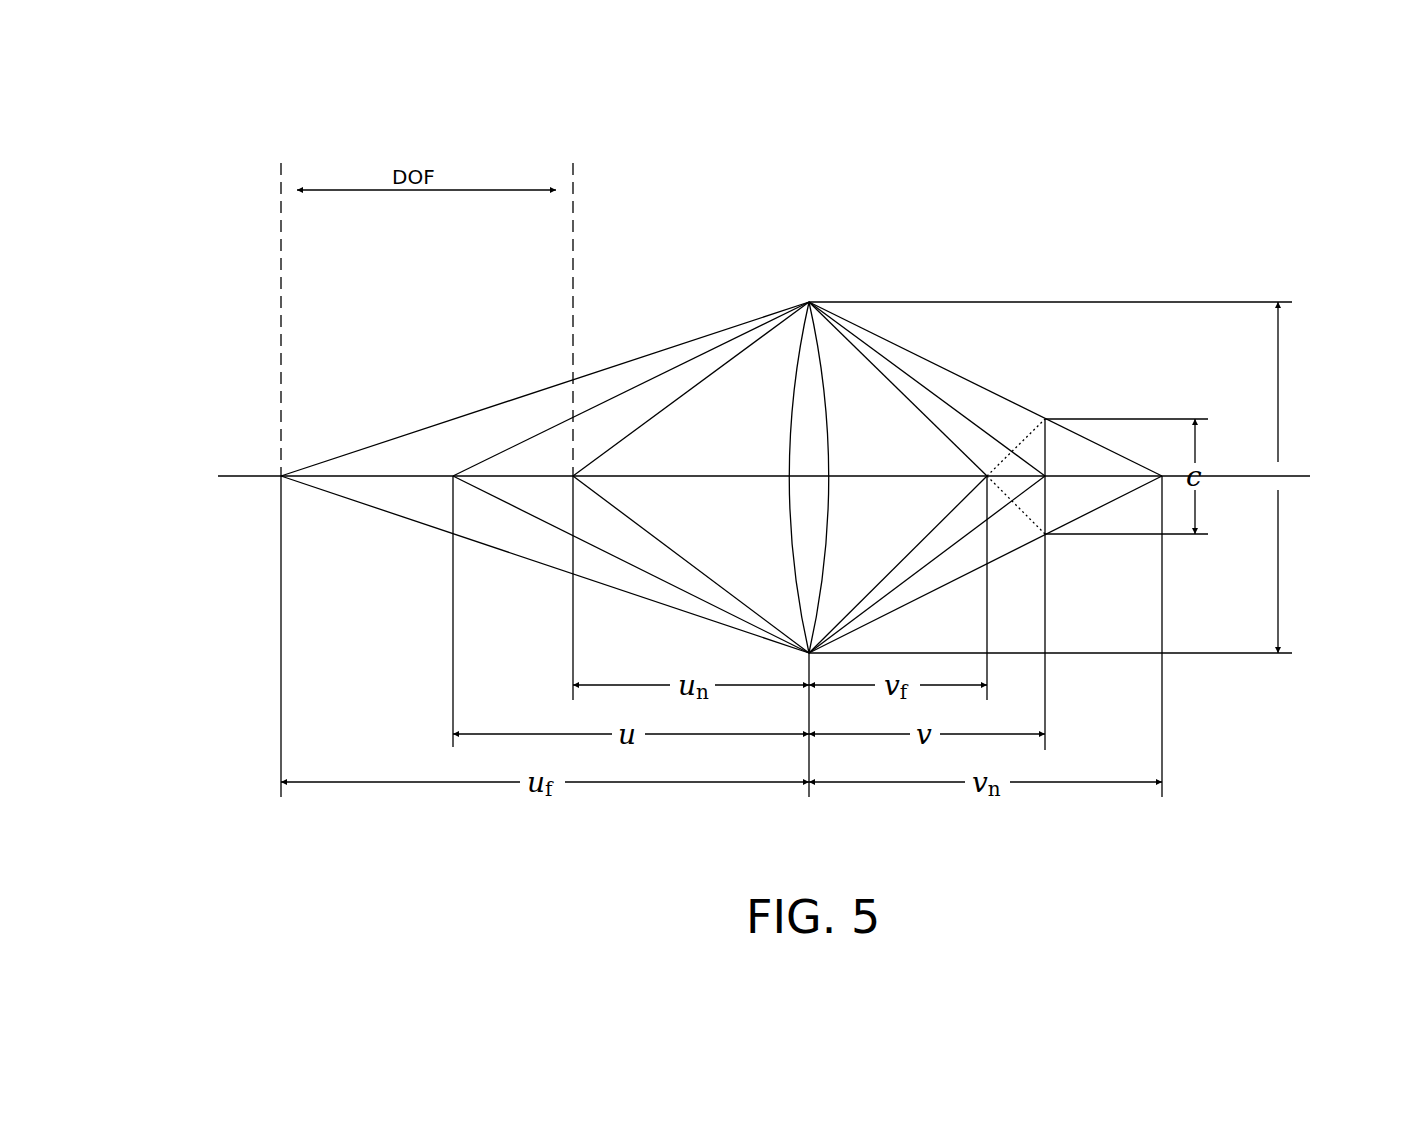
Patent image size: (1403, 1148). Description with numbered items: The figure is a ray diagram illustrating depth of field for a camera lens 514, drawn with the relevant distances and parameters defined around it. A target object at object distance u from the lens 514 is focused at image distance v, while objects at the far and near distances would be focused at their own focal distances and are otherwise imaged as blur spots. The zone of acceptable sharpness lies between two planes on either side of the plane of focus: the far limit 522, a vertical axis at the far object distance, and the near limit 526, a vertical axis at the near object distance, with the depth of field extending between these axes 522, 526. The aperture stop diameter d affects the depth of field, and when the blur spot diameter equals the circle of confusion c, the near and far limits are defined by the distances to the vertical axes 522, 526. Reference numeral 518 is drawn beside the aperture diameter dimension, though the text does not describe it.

The lens 514 is at (810, 301).
The aperture diameter 518 is at (1278, 362).
The far limit 522 is at (281, 166).
The near limit 526 is at (573, 164).